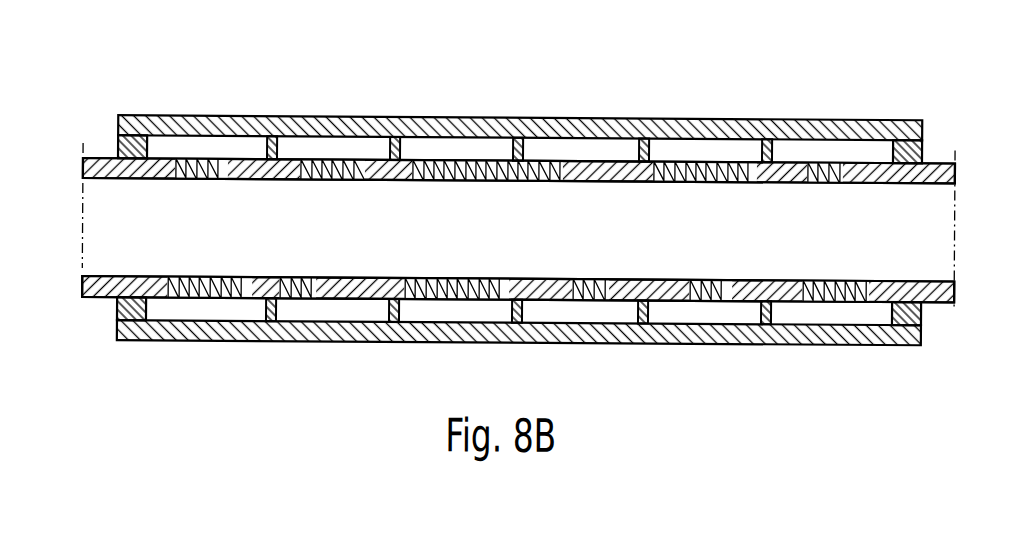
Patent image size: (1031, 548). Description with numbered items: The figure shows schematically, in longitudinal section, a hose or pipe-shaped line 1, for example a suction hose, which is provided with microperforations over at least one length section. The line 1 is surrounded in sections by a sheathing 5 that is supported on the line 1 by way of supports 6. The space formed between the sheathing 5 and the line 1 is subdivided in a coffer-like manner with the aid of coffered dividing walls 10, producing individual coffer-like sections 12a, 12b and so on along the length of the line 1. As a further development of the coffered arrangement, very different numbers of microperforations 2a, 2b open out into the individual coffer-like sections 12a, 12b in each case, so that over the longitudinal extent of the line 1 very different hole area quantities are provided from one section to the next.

The line 1 is at (947, 152).
The microperforations 2a is at (230, 183).
The microperforations 2b is at (373, 182).
The sheathing 5 is at (685, 114).
The supports 6 is at (119, 153).
The coffered dividing walls 10 is at (520, 144).
The coffer-like section 12a is at (213, 145).
The coffer-like section 12b is at (340, 150).